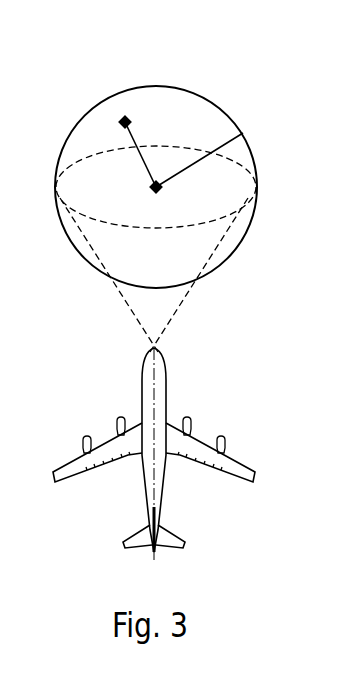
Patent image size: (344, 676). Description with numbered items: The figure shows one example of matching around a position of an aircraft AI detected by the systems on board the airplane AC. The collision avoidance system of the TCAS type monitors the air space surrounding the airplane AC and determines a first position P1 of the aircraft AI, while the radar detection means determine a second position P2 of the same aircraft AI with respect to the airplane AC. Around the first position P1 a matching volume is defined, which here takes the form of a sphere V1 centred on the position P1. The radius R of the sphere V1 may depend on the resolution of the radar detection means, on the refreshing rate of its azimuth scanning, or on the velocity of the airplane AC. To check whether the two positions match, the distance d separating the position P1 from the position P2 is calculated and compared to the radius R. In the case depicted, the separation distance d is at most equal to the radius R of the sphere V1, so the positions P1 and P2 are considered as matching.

The aircraft AI is at (115, 110).
The first position P1 is at (150, 189).
The second position P2 is at (131, 116).
The matching volume V1 is at (191, 87).
The radius R is at (215, 150).
The separation distance d is at (133, 135).
The airplane AC is at (165, 488).